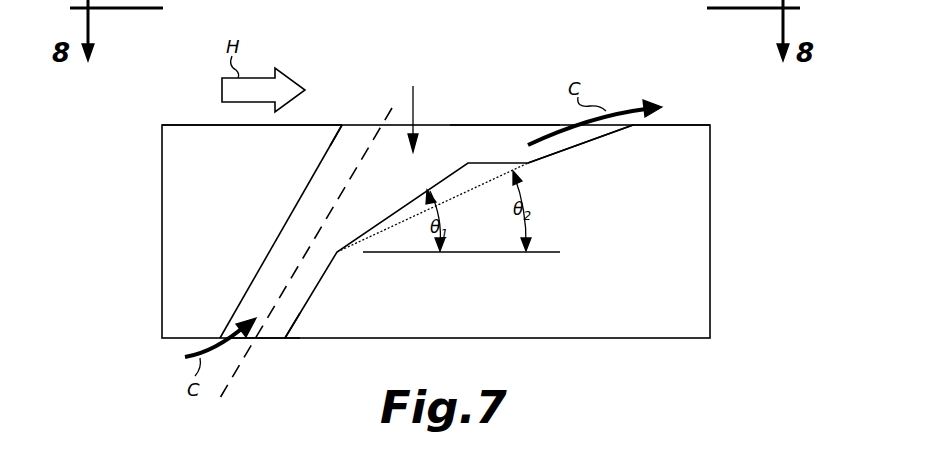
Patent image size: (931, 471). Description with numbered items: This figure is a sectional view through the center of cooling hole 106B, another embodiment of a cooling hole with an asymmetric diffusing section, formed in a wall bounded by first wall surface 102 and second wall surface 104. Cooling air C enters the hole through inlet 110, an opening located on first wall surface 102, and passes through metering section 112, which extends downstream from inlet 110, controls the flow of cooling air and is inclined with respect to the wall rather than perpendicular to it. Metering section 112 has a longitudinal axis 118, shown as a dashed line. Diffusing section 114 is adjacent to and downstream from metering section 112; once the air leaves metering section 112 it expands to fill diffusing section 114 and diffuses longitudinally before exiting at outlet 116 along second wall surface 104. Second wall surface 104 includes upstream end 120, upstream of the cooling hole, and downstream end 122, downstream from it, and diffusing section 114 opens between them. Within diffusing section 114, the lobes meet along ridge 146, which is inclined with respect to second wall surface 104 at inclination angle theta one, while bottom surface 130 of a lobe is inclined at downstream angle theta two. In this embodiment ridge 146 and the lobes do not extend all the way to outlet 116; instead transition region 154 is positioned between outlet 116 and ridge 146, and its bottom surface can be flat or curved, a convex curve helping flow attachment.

The first wall surface 102 is at (685, 340).
The second wall surface 104 is at (192, 124).
The cooling hole 106B is at (306, 163).
The inlet 110 is at (270, 340).
The metering section 112 is at (314, 293).
The diffusing section 114 is at (413, 109).
The outlet 116 is at (505, 123).
The longitudinal axis 118 is at (220, 402).
The upstream end 120 is at (333, 123).
The downstream end 122 is at (657, 127).
The bottom surface 130 is at (450, 202).
The ridge 146 is at (389, 217).
The transition region 154 is at (578, 148).